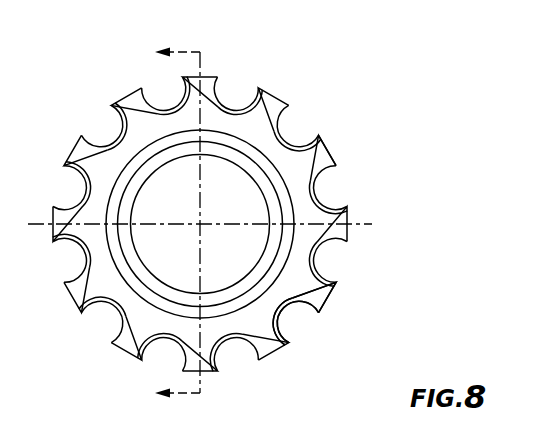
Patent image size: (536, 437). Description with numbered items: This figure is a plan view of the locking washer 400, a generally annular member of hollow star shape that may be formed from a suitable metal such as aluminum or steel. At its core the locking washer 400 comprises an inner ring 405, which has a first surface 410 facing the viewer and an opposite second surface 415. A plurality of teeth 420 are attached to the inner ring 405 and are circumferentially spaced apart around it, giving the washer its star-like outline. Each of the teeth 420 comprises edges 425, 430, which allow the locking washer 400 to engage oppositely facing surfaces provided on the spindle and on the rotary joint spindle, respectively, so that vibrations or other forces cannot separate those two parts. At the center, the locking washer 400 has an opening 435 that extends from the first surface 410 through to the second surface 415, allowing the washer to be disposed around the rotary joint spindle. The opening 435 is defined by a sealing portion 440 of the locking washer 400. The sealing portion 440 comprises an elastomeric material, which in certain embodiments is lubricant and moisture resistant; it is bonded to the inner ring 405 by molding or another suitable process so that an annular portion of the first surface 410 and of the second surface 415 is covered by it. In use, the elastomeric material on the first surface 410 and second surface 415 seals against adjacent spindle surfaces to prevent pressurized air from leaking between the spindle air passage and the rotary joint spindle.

The locking washer 400 is at (425, 81).
The inner ring 405 is at (300, 247).
The first surface 410 is at (313, 183).
The second surface 415 is at (287, 310).
The teeth 420 is at (289, 104).
The edge 425 is at (328, 153).
The edge 430 is at (336, 164).
The opening 435 is at (245, 204).
The sealing portion 440 is at (133, 160).